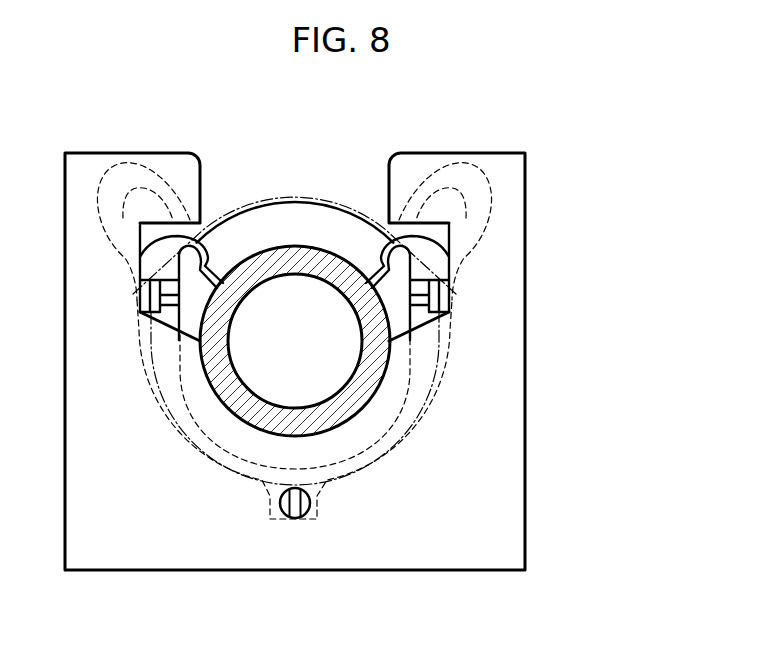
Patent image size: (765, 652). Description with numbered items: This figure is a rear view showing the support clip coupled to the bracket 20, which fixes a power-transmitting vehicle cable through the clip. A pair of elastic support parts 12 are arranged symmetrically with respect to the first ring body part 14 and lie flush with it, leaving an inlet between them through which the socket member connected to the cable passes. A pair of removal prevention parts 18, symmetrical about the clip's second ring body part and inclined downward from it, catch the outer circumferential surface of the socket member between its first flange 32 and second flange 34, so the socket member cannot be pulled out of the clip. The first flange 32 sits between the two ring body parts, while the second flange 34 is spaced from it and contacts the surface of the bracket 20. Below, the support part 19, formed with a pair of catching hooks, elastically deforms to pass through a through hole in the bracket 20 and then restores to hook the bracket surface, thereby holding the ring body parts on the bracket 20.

The elastic support part 12 is at (172, 188).
The first ring body part 14 is at (403, 450).
The removal prevention part 18 is at (218, 262).
The support part 19 is at (297, 513).
The bracket 20 is at (538, 322).
The first flange 32 is at (295, 200).
The second flange 34 is at (333, 203).